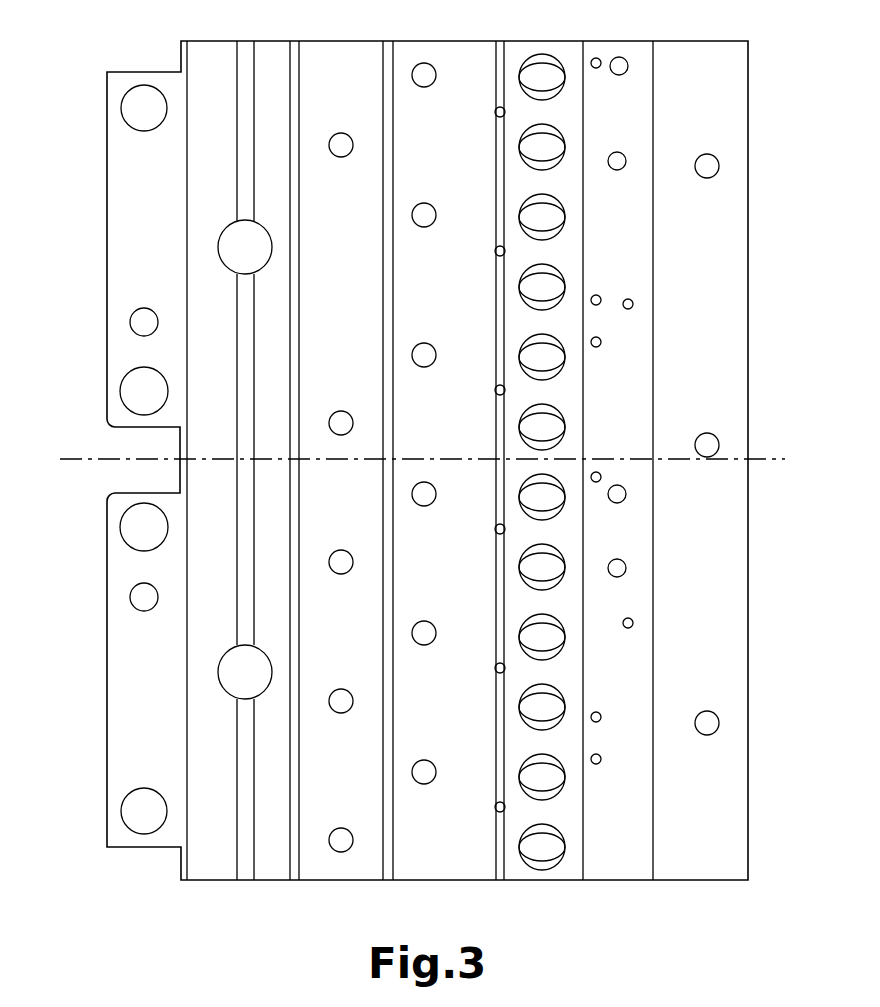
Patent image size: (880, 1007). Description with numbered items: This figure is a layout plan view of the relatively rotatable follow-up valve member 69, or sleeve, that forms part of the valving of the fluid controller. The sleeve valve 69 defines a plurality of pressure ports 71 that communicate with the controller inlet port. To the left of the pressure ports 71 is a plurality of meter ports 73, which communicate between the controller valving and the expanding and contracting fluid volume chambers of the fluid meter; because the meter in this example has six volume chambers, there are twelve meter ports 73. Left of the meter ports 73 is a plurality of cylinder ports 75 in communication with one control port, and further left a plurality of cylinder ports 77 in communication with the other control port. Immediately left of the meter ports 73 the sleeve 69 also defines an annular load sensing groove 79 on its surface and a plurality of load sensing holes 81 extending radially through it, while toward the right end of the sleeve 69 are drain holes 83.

The follow-up valve member 69 is at (147, 227).
The pressure ports 71 is at (618, 166).
The meter ports 73 is at (540, 155).
The cylinder ports 75 is at (420, 76).
The cylinder ports 77 is at (341, 150).
The annular load sensing groove 79 is at (500, 438).
The load sensing holes 81 is at (496, 112).
The drain holes 83 is at (712, 166).